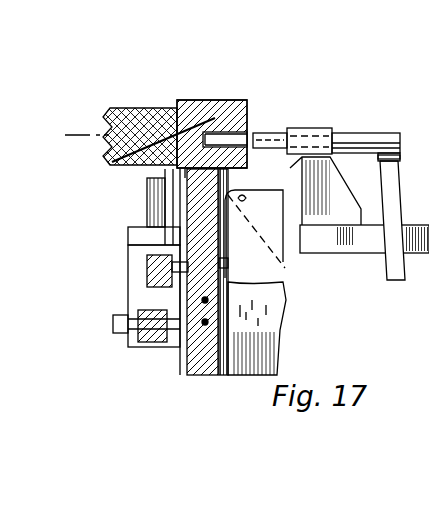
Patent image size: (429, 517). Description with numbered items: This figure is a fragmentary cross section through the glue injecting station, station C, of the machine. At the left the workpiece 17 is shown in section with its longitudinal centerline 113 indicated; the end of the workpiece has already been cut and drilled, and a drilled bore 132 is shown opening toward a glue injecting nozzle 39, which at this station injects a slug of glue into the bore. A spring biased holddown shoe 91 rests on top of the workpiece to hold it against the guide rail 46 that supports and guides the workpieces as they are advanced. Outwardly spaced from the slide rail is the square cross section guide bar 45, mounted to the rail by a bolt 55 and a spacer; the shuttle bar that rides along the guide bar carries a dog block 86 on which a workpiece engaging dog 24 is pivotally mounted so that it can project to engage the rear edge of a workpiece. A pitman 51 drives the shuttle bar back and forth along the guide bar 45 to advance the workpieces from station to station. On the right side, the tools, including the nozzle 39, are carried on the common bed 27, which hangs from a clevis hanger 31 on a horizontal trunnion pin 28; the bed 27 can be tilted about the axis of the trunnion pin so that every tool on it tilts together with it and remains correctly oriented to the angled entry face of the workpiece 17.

The workpiece 17 is at (108, 161).
The longitudinal centerline 113 is at (73, 135).
The holddown shoe 91 is at (206, 101).
The drilled bore 132 is at (236, 140).
The glue injecting nozzle 39 is at (289, 131).
The station C is at (370, 98).
The trunnion pin 28 is at (284, 175).
The clevis hanger 31 is at (290, 258).
The bolt 55 is at (283, 283).
The bed 27 is at (417, 262).
The guide rail 46 is at (210, 376).
The dog 24 is at (172, 195).
The dog block 86 is at (148, 191).
The guide bar 45 is at (147, 266).
The pitman 51 is at (160, 341).